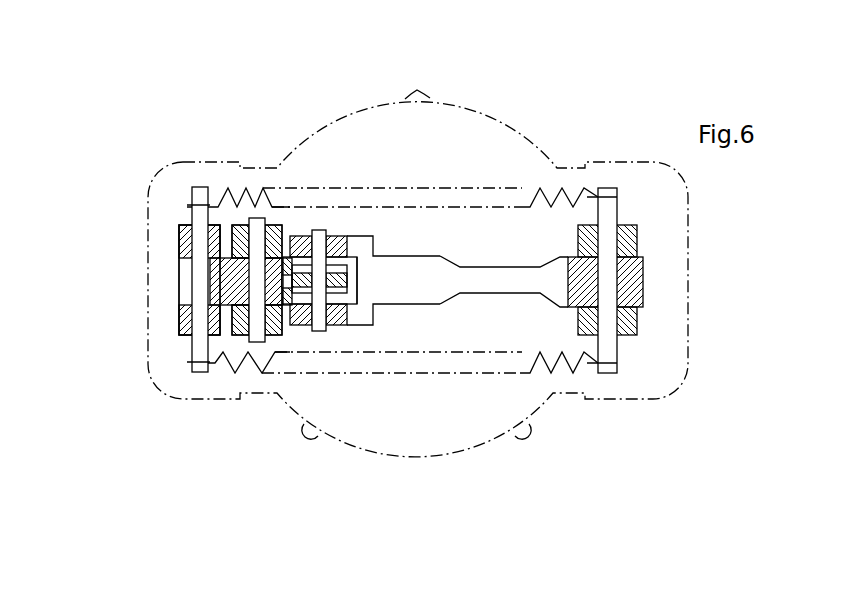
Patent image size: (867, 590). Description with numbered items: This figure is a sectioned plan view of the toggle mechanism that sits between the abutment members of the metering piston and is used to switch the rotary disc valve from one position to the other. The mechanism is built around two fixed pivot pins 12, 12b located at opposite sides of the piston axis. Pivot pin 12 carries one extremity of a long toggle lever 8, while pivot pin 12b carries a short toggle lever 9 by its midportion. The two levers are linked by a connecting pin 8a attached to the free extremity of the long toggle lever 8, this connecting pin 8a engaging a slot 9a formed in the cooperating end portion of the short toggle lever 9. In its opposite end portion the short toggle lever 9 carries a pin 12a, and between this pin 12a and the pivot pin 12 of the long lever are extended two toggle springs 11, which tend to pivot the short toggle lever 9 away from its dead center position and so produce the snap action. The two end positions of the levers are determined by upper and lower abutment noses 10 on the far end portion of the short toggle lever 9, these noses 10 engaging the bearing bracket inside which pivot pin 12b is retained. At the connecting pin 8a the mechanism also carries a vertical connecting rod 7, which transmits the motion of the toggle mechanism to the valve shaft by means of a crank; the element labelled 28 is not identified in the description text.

The connecting rod 7 is at (337, 325).
The long toggle lever 8 is at (542, 280).
The connecting pin 8a is at (319, 240).
The short toggle lever 9 is at (227, 335).
The slot 9a is at (338, 258).
The abutment noses 10 is at (217, 330).
The toggle springs 11 is at (443, 360).
The pivot pin 12 is at (604, 207).
The pin 12a is at (199, 207).
The pivot pin 12b is at (257, 222).
The carriage 28 is at (275, 336).